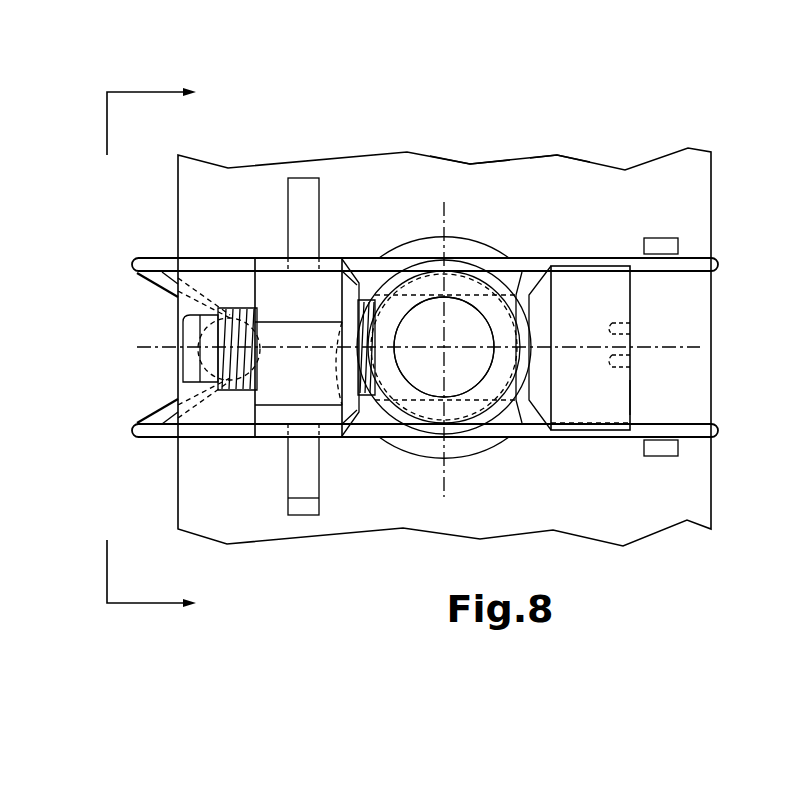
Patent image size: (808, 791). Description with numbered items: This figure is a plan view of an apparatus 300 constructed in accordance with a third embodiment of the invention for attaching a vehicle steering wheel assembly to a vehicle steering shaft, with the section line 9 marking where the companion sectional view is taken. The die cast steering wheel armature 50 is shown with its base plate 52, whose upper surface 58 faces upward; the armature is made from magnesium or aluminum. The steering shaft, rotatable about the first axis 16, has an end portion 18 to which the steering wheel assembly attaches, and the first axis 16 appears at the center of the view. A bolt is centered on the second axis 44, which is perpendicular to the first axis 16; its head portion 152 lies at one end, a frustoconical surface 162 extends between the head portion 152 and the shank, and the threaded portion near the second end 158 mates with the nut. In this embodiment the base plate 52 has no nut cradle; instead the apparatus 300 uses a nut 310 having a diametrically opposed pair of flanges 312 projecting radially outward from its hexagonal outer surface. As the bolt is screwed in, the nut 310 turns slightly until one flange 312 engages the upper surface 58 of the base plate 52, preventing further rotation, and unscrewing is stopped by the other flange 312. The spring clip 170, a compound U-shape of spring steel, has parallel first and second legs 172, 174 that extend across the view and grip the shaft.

The section line 9- 9 is at (156, 348).
The apparatus 300 is at (476, 299).
The steering wheel armature 50 is at (697, 186).
The base plate 52 is at (558, 203).
The upper surface 58 is at (470, 192).
The second axis 44 is at (695, 347).
The second leg 174 is at (718, 264).
The first leg 172 is at (718, 433).
The spring clip 170 is at (158, 292).
The nut 310 is at (270, 250).
The flanges 312 is at (305, 200).
The frustoconical surface 162 is at (534, 292).
The first axis 16 is at (447, 350).
The end portion 18 is at (432, 372).
The head portion 152 is at (600, 310).
The second end 158 is at (645, 396).